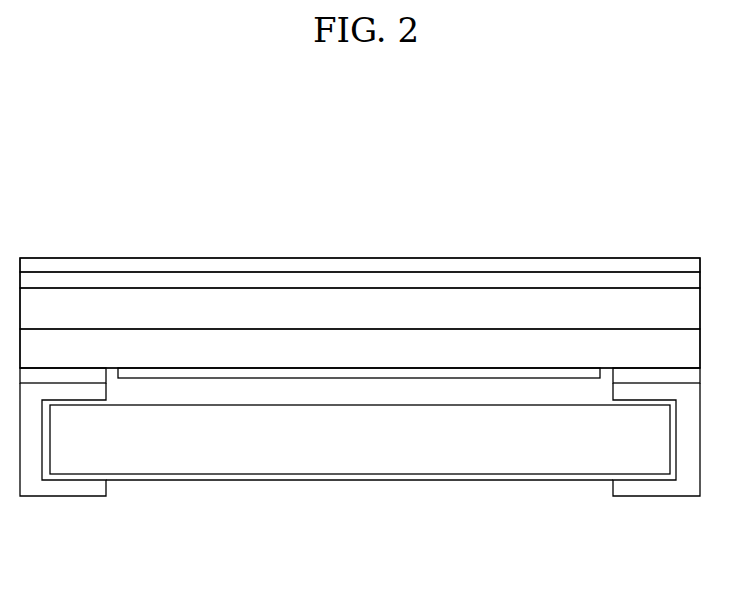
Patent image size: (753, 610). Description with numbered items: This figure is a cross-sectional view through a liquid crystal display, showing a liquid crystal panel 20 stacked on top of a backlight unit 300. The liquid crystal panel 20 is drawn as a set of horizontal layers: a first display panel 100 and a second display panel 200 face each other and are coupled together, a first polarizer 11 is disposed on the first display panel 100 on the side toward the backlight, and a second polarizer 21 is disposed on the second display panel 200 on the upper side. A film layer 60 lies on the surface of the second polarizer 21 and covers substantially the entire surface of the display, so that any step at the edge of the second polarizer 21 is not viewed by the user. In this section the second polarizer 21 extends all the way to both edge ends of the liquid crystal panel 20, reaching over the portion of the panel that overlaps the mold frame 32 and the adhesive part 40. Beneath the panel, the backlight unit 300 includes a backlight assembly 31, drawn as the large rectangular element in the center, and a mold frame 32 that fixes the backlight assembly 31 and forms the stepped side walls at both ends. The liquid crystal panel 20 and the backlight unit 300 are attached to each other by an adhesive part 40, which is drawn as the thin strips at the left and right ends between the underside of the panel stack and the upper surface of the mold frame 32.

The liquid crystal panel 20 is at (180, 208).
The second polarizer 21 is at (198, 282).
The second display panel 200 is at (270, 304).
The first display panel 100 is at (357, 350).
The first polarizer 11 is at (449, 373).
The film layer 60 is at (523, 267).
The adhesive part 40 is at (73, 368).
The backlight unit 300 is at (360, 482).
The backlight assembly 31 is at (652, 547).
The mold frame 32 is at (630, 488).